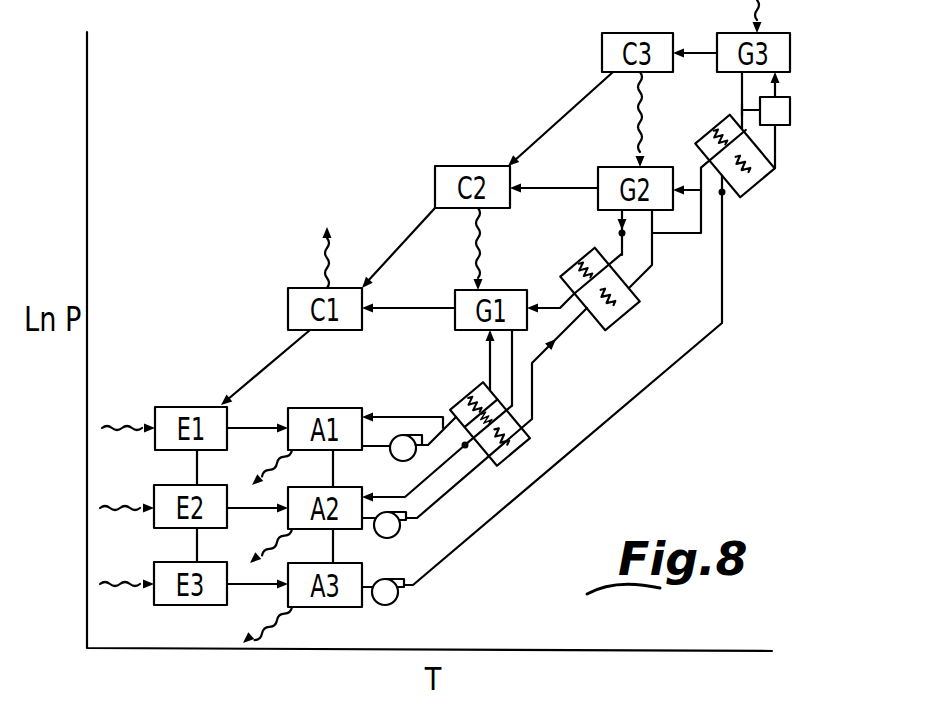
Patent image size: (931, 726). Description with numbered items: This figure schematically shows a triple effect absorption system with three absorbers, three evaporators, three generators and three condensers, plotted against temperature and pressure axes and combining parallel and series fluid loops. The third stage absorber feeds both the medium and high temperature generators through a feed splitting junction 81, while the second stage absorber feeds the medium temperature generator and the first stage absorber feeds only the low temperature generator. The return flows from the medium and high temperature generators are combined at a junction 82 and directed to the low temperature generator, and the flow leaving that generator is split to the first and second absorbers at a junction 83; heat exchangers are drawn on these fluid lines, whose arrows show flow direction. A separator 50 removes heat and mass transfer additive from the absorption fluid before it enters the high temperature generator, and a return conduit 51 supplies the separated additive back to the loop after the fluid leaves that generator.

The separator 50 is at (790, 108).
The return conduit 51 is at (752, 110).
The feed splitting junction 81 is at (724, 193).
The junction 82 is at (620, 232).
The junction 83 is at (465, 445).